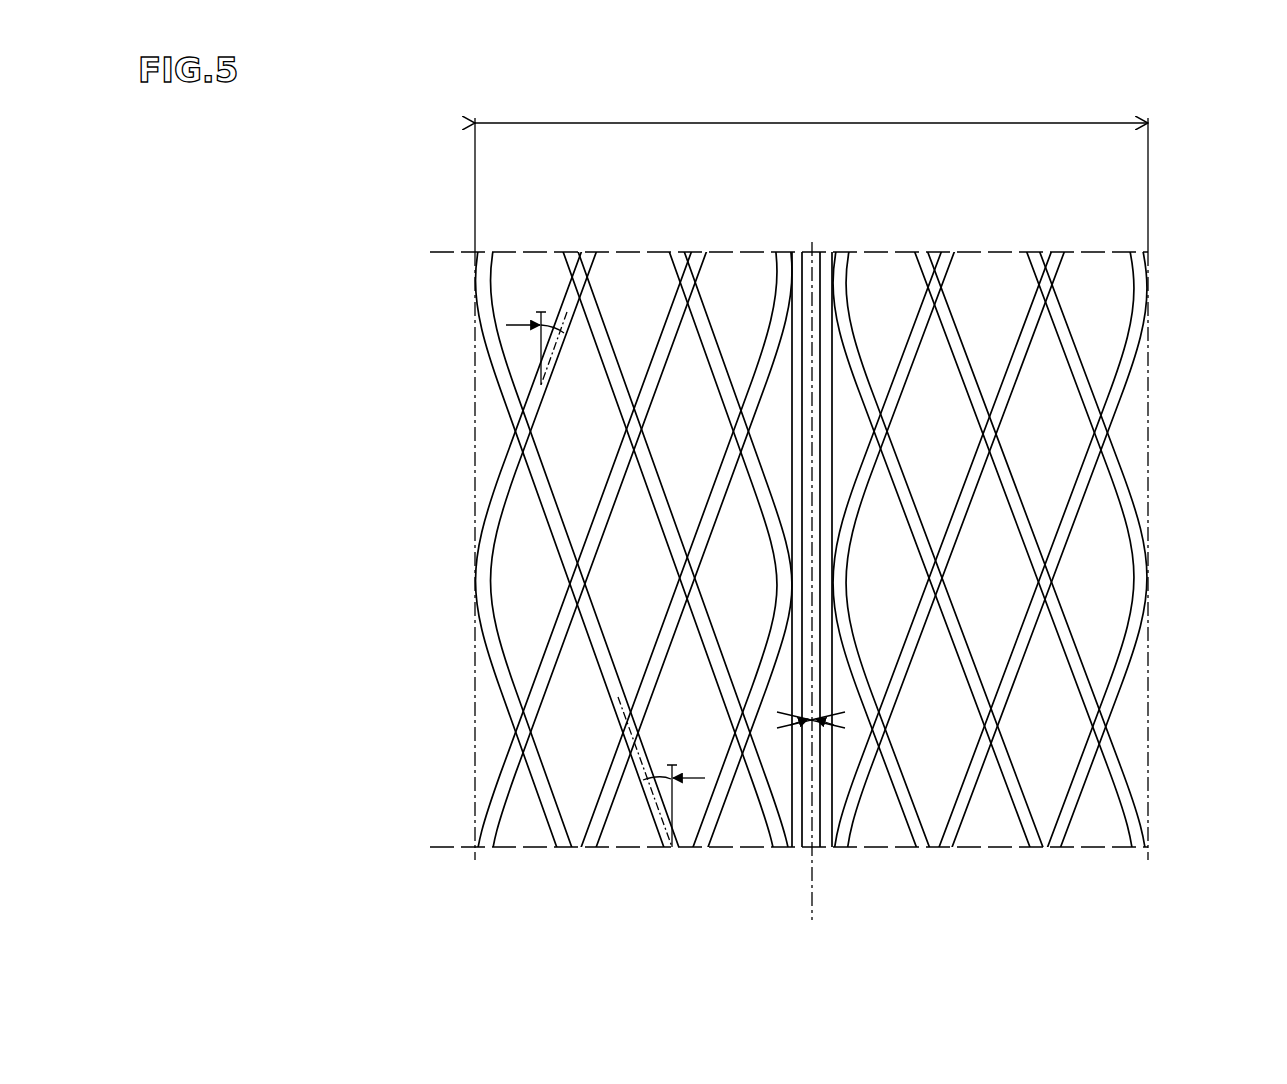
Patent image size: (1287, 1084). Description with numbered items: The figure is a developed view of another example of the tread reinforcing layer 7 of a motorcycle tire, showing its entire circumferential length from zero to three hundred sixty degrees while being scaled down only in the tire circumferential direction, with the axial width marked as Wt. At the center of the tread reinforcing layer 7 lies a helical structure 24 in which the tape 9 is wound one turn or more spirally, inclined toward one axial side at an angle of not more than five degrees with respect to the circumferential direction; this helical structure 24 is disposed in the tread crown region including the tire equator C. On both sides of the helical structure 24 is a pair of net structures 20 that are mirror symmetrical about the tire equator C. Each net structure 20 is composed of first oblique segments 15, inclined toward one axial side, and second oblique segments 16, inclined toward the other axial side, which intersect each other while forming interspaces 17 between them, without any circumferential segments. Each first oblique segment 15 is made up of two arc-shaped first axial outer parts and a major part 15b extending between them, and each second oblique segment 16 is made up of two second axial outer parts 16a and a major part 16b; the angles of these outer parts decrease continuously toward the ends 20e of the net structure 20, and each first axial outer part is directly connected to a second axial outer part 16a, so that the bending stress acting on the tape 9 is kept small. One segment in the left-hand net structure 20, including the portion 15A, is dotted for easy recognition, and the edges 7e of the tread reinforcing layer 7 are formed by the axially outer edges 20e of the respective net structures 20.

The tread reinforcing layer 7 is at (1200, 211).
The edges of the tread reinforcing layer 7e is at (478, 851).
The tape 9 is at (904, 550).
The first oblique segments 15 is at (540, 550).
The first cord portion 15A is at (507, 772).
The major part of the first oblique segment 15b is at (682, 517).
The second oblique segments 16 is at (622, 490).
The second axial outer parts 16a is at (481, 629).
The major part of the second oblique segment 16b is at (553, 805).
The interspaces 17 is at (990, 575).
The net structure 20 is at (555, 228).
The ends of the net structure 20e is at (792, 851).
The helical structure 24 is at (792, 238).
The tire equator C is at (811, 597).
The belt width Wt is at (811, 172).